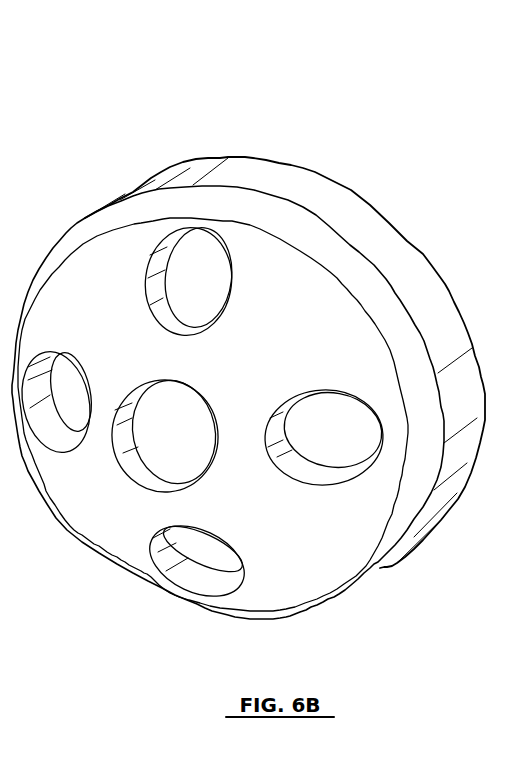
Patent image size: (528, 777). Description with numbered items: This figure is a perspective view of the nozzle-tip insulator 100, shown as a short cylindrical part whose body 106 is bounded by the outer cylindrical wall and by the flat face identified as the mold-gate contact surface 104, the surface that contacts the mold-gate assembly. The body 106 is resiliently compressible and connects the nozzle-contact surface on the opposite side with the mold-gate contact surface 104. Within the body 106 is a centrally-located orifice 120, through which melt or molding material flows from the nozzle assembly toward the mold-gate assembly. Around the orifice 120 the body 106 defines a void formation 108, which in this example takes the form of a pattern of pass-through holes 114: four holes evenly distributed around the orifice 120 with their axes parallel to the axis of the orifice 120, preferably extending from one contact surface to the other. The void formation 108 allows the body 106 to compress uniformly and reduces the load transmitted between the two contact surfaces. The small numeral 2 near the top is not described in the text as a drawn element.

The section line indicator 2 is at (242, 8).
The nozzle-tip insulator 100 is at (256, 383).
The mold-gate contact surface 104 is at (92, 240).
The body 106 is at (347, 190).
The void formation 108 is at (256, 383).
The pattern of pass-through holes 114 is at (205, 267).
The orifice 120 is at (190, 457).